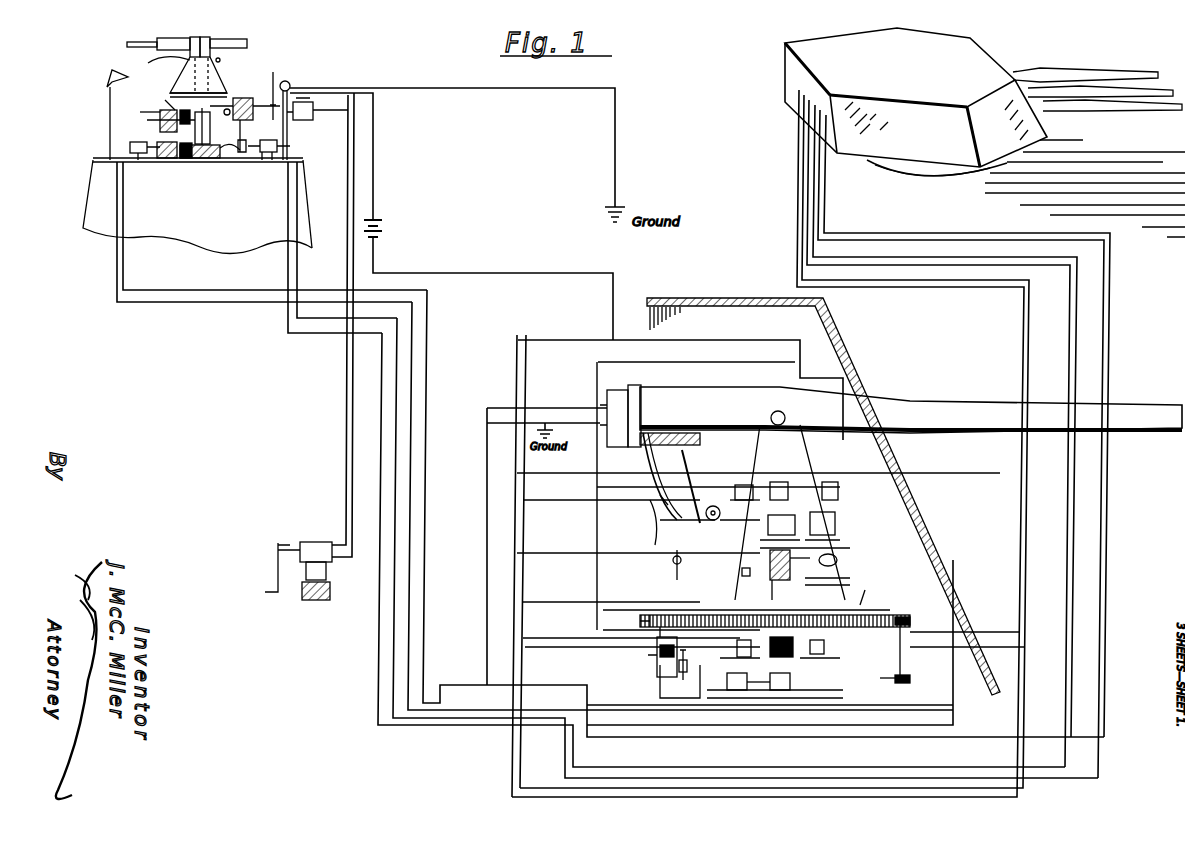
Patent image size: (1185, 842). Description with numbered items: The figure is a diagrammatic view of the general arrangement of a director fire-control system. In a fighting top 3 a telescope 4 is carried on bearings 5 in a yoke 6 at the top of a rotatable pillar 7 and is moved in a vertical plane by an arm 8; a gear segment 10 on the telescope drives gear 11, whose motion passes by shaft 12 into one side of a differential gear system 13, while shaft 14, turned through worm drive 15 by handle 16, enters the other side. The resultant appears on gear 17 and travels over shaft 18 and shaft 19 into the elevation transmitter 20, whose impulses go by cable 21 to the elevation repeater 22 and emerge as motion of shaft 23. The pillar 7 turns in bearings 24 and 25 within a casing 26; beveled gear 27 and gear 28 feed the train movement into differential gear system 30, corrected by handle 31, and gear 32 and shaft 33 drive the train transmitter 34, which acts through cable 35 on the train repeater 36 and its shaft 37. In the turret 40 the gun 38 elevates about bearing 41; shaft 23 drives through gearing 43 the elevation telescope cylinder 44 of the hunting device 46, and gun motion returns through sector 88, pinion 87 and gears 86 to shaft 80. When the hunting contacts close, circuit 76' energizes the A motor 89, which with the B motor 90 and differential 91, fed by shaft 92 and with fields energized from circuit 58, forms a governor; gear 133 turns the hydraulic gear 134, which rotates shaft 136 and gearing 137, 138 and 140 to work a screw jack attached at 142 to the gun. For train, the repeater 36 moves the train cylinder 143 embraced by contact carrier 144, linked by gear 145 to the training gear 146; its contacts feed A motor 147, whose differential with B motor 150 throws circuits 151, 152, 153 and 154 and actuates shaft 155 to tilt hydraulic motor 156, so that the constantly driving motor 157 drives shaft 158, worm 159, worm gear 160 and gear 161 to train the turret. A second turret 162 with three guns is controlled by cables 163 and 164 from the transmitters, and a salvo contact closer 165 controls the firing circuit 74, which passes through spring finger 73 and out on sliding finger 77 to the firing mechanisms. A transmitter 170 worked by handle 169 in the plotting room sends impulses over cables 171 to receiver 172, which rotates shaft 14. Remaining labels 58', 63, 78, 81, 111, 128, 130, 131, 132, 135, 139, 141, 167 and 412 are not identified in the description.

The fighting top 3 is at (93, 160).
The telescope 4 is at (232, 42).
The bearings 5 is at (192, 42).
The yoke 6 is at (205, 41).
The rotatable pillar 7 is at (212, 126).
The arm 8 is at (165, 60).
The gear segment 10 is at (222, 70).
The gear 11 is at (198, 91).
The shaft 12 is at (222, 60).
The differential gear system 13 is at (246, 98).
The shaft 14 is at (147, 101).
The worm drive 15 is at (231, 104).
The handle 16 is at (273, 72).
The gear 17 is at (245, 95).
The shaft 18 is at (234, 136).
The shaft 19 is at (268, 153).
The elevation transmitter 20 is at (266, 140).
The electric cable 21 is at (283, 198).
The elevation repeater 22 is at (840, 560).
The shaft 23 is at (807, 565).
The bearing 24 is at (185, 160).
The bearing 25 is at (210, 160).
The casing 26 is at (238, 158).
The beveled gear 27 is at (215, 128).
The gear 28 is at (180, 111).
The differential gear system 30 is at (165, 101).
The handle 31 is at (134, 115).
The gear 32 is at (170, 125).
The shaft 33 is at (164, 150).
The train transmitter 34 is at (141, 143).
The cable 35 is at (125, 196).
The train repeater 36 is at (689, 669).
The shaft 37 is at (689, 665).
The gun 38 is at (900, 400).
The turret 40 is at (845, 350).
The bearing 41 is at (780, 395).
The system of gearing 43 is at (787, 575).
The elevation telescope cylinder 44 is at (784, 577).
The hunting device 46 is at (827, 585).
The outside circuit 58 is at (775, 532).
The conductor 58' is at (573, 582).
The drape edge 63 is at (311, 200).
The spring finger 73 is at (792, 480).
The firing circuit 74 is at (345, 88).
The circuit 76' is at (870, 590).
The sliding finger 77 is at (762, 582).
The contact 78 is at (754, 592).
The shaft 80 is at (737, 577).
The contact 81 is at (749, 575).
The gearing 86 is at (673, 570).
The pinion 87 is at (657, 511).
The gear segment 88 is at (656, 522).
The A motor 89 is at (736, 486).
The B motor 90 is at (838, 481).
The differential gear arrangement 91 is at (822, 510).
The shaft 92 is at (770, 486).
The conductor 111 is at (565, 472).
The contact 128 is at (768, 448).
The trunnion 130 is at (773, 436).
The contact 131 is at (801, 436).
The contact 132 is at (811, 450).
The gear 133 is at (790, 510).
The hydraulic gear 134 is at (797, 540).
The relay 135 is at (838, 520).
The shaft 136 is at (772, 521).
The gearing 137 is at (739, 533).
The gearing 138 is at (724, 510).
The contact 139 is at (744, 562).
The gearing 140 is at (687, 533).
The link 141 is at (690, 462).
The screw jack attachment 142 is at (670, 476).
The train telescope cylinder 143 is at (650, 658).
The contact carrier 144 is at (660, 665).
The gear 145 is at (631, 620).
The training gear 146 is at (775, 611).
The A motor 147 is at (740, 642).
The B motor 150 is at (826, 645).
The circuit 151 is at (786, 604).
The circuit 152 is at (808, 599).
The circuit 153 is at (813, 611).
The circuit 154 is at (830, 614).
The shaft 155 is at (781, 675).
The hydraulic motor 156 is at (816, 688).
The constantly driving motor 157 is at (741, 675).
The shaft 158 is at (775, 680).
The worm 159 is at (900, 688).
The worm gear 160 is at (925, 678).
The gear 161 is at (925, 618).
The second turret 162 is at (985, 132).
The cable 163 is at (805, 780).
The cable 164 is at (104, 220).
The salvo contact closer 165 is at (289, 82).
The contact 167 is at (872, 614).
The handle 169 is at (278, 574).
The synchronous transmitter 170 is at (316, 548).
The cables 171 is at (346, 463).
The synchronous receiver 172 is at (314, 112).
The contact 412 is at (822, 452).